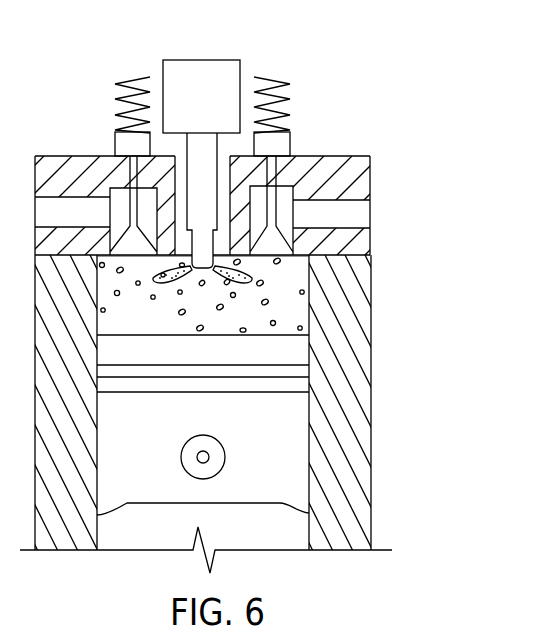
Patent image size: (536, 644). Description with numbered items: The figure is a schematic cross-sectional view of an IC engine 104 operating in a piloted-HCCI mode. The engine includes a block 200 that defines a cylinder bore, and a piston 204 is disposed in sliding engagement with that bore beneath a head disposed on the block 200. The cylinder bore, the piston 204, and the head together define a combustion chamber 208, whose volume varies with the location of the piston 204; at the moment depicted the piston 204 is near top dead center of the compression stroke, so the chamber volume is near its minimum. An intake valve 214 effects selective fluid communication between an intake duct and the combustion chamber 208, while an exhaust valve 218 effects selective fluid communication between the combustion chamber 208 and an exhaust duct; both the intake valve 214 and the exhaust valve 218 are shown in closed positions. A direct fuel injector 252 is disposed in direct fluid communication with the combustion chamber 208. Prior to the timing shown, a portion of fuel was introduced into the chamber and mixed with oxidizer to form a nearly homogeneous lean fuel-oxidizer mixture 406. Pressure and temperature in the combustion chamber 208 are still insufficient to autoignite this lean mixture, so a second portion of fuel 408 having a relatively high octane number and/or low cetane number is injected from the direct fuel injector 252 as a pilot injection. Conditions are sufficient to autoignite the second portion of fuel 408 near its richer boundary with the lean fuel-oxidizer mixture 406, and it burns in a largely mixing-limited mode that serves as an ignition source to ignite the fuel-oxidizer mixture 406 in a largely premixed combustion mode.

The IC engine 104 is at (415, 49).
The block 200 is at (371, 392).
The piston 204 is at (283, 442).
The combustion chamber 208 is at (160, 320).
The intake valve 214 is at (288, 176).
The exhaust valve 218 is at (115, 177).
The direct fuel injector 252 is at (218, 108).
The lean fuel-oxidizer mixture 406 is at (278, 313).
The second portion of fuel 408 is at (253, 275).